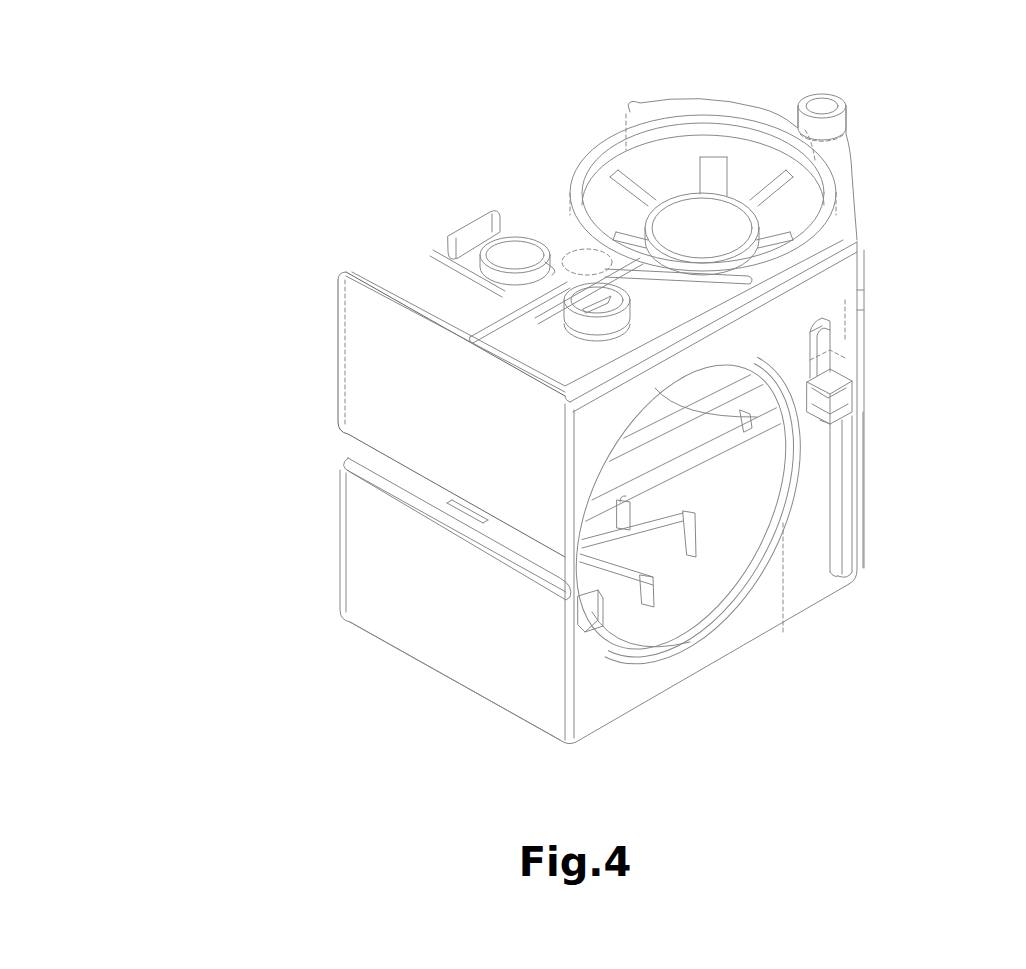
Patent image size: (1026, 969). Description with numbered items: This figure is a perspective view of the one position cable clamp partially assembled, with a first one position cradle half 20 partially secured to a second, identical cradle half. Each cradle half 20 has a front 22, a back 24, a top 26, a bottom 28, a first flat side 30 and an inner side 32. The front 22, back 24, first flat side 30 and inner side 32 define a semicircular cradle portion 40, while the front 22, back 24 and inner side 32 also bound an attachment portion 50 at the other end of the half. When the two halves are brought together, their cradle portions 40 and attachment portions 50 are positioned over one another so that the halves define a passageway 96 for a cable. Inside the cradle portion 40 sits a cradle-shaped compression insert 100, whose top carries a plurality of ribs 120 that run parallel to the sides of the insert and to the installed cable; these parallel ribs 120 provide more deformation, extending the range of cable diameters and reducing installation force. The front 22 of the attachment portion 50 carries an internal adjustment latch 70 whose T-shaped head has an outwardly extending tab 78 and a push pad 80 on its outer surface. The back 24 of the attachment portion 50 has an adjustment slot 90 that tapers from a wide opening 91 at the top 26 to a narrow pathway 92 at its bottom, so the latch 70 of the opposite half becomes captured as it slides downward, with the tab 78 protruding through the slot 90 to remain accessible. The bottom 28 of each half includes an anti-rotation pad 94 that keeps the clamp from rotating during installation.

The one position cradle half 20 is at (268, 321).
The front 22 is at (392, 240).
The back 24 is at (845, 288).
The top 26 is at (362, 470).
The bottom 28 is at (681, 102).
The first flat side 30 is at (367, 367).
The inner side 32 is at (848, 424).
The cradle portion 40 is at (758, 372).
The attachment portion 50 is at (848, 392).
The internal adjustment latch 70 is at (828, 398).
The tab 78 is at (818, 413).
The push pad 80 is at (832, 370).
The adjustment slot 90 is at (812, 347).
The wide opening 91 is at (858, 428).
The narrow pathway 92 is at (865, 303).
The anti-rotation pad 94 is at (845, 108).
The passageway 96 is at (795, 498).
The compression insert 100 is at (627, 620).
The ribs 120 is at (585, 632).